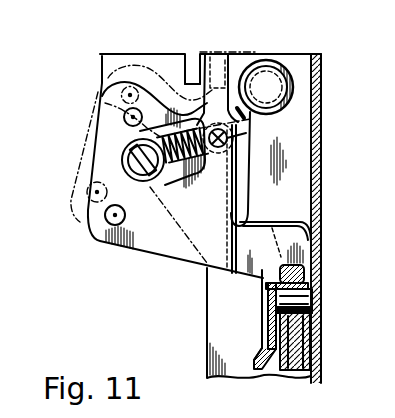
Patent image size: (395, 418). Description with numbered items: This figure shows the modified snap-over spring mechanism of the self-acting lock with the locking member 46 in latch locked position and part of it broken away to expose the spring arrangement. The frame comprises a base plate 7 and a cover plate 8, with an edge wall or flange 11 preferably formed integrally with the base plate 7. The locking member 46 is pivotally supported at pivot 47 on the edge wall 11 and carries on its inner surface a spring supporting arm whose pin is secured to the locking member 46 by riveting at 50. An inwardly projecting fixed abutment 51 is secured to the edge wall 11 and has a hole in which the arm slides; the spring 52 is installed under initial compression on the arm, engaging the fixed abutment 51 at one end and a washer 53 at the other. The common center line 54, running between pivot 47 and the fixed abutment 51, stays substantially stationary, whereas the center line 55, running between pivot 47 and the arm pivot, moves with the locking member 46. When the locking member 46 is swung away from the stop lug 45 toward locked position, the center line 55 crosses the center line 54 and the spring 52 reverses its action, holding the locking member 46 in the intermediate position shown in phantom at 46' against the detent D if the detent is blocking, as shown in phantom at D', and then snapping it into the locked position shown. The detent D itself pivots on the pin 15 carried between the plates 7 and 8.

The base plate 7 is at (322, 151).
The cover plate 8 is at (253, 359).
The edge wall or flange 11 is at (222, 297).
The pin 15 is at (300, 300).
The stop lug 45 is at (192, 72).
The locking member 46 is at (157, 167).
The locking member in intermediate position 46' is at (70, 166).
The pivot 47 is at (241, 110).
The riveting 50 is at (230, 148).
The fixed abutment 51 is at (143, 178).
The spring 52 is at (233, 122).
The washer 53 is at (217, 150).
The common center line 54 is at (237, 56).
The center line 55 is at (238, 131).
The detent D is at (312, 342).
The detent in locking member blocking position D' is at (309, 266).